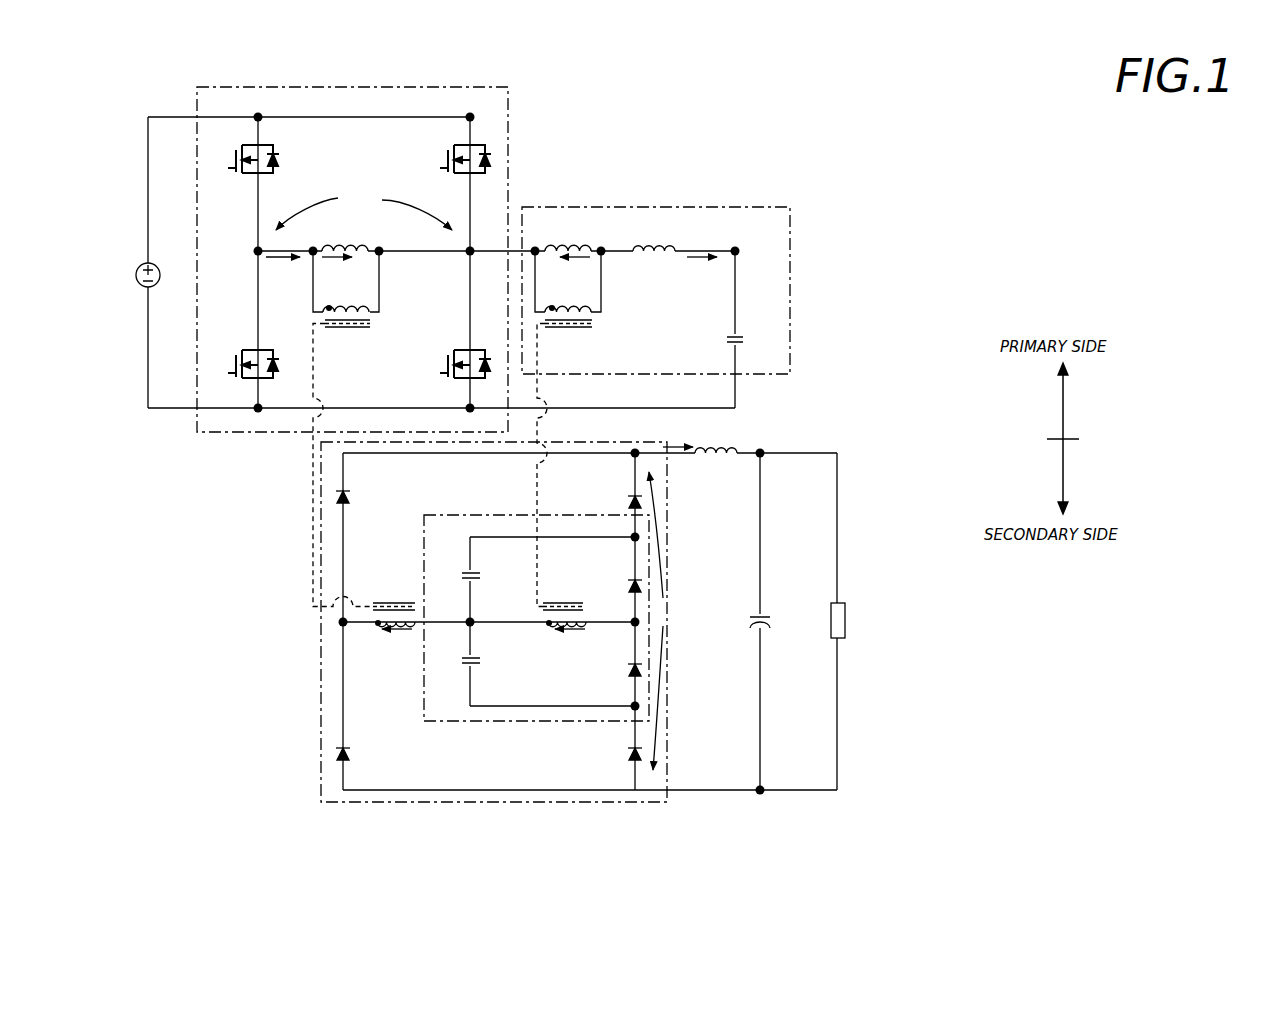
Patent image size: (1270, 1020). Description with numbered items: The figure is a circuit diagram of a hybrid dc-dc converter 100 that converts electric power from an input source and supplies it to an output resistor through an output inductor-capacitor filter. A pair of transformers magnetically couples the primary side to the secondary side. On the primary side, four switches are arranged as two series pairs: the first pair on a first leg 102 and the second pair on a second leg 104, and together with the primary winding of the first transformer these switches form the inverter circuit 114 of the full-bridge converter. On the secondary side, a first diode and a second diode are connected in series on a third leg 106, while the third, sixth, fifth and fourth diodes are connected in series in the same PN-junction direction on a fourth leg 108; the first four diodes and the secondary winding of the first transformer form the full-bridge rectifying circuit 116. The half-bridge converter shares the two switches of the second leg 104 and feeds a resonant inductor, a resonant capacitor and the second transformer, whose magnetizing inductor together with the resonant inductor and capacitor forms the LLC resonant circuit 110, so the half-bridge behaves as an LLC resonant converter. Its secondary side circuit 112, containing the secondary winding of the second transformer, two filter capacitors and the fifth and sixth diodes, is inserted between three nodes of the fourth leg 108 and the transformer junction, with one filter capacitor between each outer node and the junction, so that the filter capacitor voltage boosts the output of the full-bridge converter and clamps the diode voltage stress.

The hybrid dc-dc converter 100 is at (128, 75).
The first leg 102 is at (257, 136).
The second leg 104 is at (470, 127).
The third leg 106 is at (343, 773).
The fourth leg 108 is at (632, 776).
The LLC resonant circuit 110 is at (738, 207).
The secondary side circuit 112 is at (424, 690).
The inverter circuit 114 is at (197, 421).
The full-bridge rectifying circuit 116 is at (321, 658).